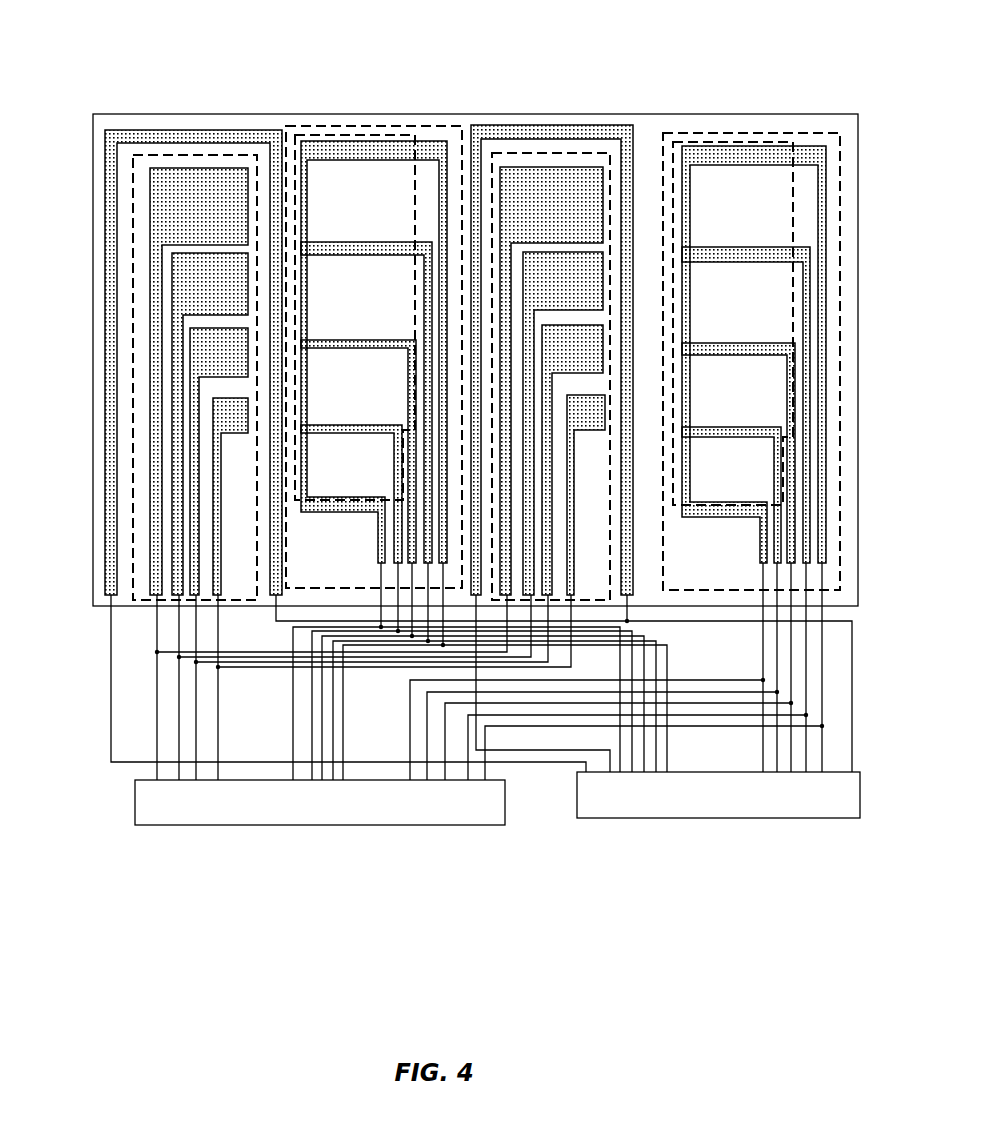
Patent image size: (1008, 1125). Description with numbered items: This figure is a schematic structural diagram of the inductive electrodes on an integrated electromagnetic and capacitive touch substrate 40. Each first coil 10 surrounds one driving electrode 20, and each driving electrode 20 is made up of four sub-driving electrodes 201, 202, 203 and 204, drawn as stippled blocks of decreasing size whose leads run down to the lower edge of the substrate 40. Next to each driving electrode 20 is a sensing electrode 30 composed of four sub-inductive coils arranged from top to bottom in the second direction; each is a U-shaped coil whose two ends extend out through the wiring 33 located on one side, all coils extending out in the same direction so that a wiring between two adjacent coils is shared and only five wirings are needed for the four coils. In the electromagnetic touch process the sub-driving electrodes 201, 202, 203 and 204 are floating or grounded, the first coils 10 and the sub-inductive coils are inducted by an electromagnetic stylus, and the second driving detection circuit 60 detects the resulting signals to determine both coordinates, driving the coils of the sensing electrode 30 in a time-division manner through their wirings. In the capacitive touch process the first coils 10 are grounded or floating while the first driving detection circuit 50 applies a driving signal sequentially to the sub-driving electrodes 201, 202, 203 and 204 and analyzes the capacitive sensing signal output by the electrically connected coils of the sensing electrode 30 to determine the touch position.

The first coil 10 is at (223, 133).
The driving electrode 20 is at (135, 545).
The sensing electrode 30 is at (413, 321).
The wiring 33 is at (447, 162).
The substrate 40 is at (658, 114).
The first driving detection circuit 50 is at (320, 802).
The second driving detection circuit 60 is at (718, 795).
The sub-driving electrode 201 is at (178, 197).
The sub-driving electrode 202 is at (183, 282).
The sub-driving electrode 203 is at (212, 356).
The sub-driving electrode 204 is at (218, 418).